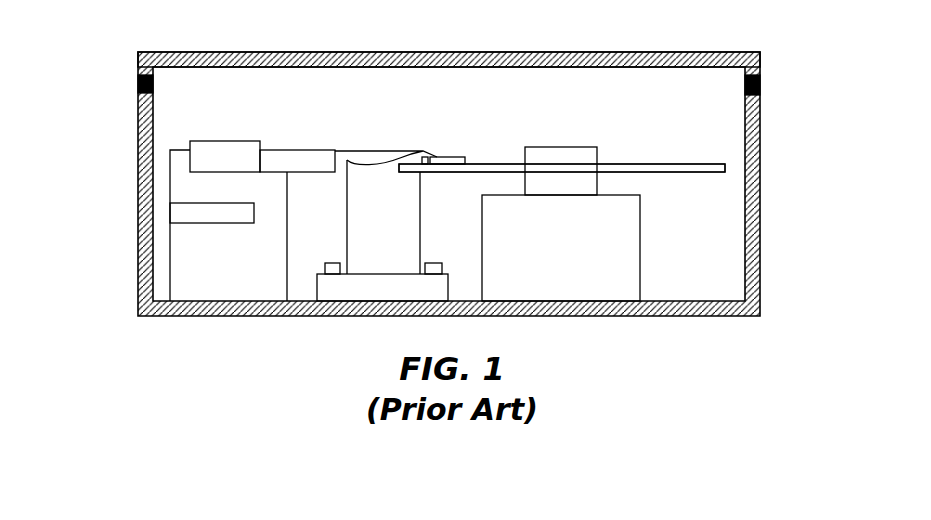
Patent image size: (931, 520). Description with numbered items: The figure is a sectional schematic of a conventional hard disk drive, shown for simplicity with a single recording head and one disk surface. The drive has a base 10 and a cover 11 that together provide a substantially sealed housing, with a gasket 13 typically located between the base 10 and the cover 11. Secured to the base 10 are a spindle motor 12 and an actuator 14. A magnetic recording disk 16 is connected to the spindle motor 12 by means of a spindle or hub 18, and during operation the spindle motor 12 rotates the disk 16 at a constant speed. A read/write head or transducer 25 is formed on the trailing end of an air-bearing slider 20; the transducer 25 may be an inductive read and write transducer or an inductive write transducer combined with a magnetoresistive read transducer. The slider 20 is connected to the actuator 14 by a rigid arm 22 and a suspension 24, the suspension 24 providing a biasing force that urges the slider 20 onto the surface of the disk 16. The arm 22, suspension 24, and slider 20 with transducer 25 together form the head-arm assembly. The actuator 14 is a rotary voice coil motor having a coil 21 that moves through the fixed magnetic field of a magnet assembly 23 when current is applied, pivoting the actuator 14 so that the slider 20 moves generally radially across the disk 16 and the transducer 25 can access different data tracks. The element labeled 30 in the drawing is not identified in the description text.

The base 10 is at (675, 314).
The cover 11 is at (158, 52).
The spindle motor 12 is at (628, 260).
The gasket 13 is at (762, 84).
The actuator 14 is at (228, 285).
The magnetic recording disk 16 is at (688, 164).
The spindle or hub 18 is at (560, 148).
The air-bearing slider 20 is at (445, 156).
The coil 21 is at (228, 150).
The rigid arm 22 is at (302, 158).
The magnet assembly 23 is at (180, 213).
The suspension 24 is at (352, 150).
The read/write head or transducer 25 is at (467, 163).
The membrane 30 is at (373, 152).